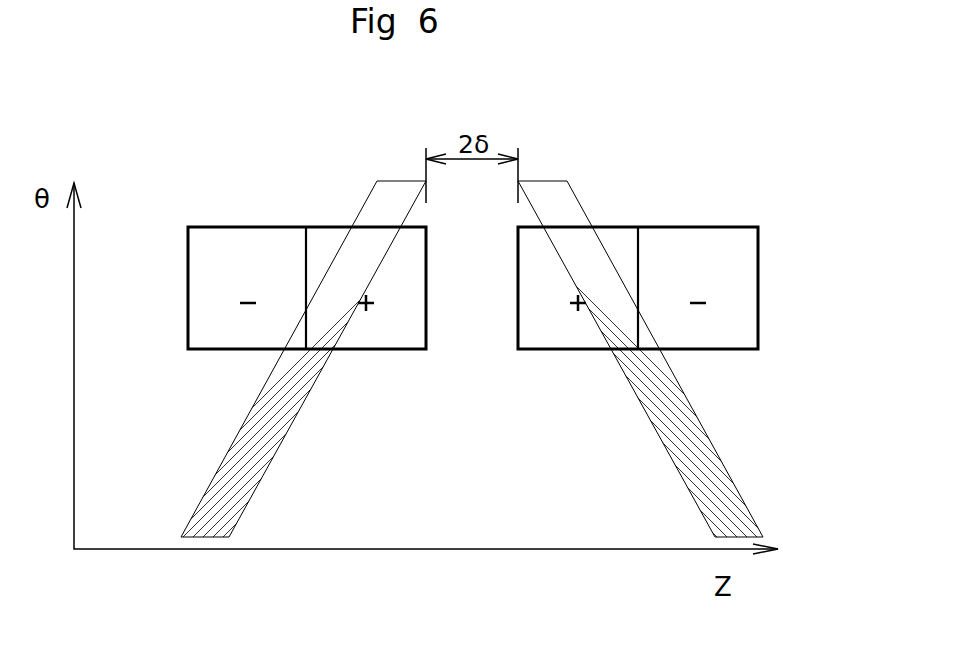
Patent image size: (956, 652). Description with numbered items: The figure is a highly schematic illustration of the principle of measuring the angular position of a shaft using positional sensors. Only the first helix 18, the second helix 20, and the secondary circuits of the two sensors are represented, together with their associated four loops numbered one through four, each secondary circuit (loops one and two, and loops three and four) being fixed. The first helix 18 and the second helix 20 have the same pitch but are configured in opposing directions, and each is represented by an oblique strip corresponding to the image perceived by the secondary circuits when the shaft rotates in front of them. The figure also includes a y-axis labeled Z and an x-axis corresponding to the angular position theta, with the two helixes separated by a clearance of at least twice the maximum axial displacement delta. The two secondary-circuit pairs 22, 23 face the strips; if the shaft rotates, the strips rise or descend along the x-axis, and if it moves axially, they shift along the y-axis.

The first helix 18 is at (245, 450).
The second helix 20 is at (698, 450).
The first quadrant detector (elements 1 and 2) 22 is at (222, 183).
The second quadrant detector (elements 3 and 4) 23 is at (725, 181).